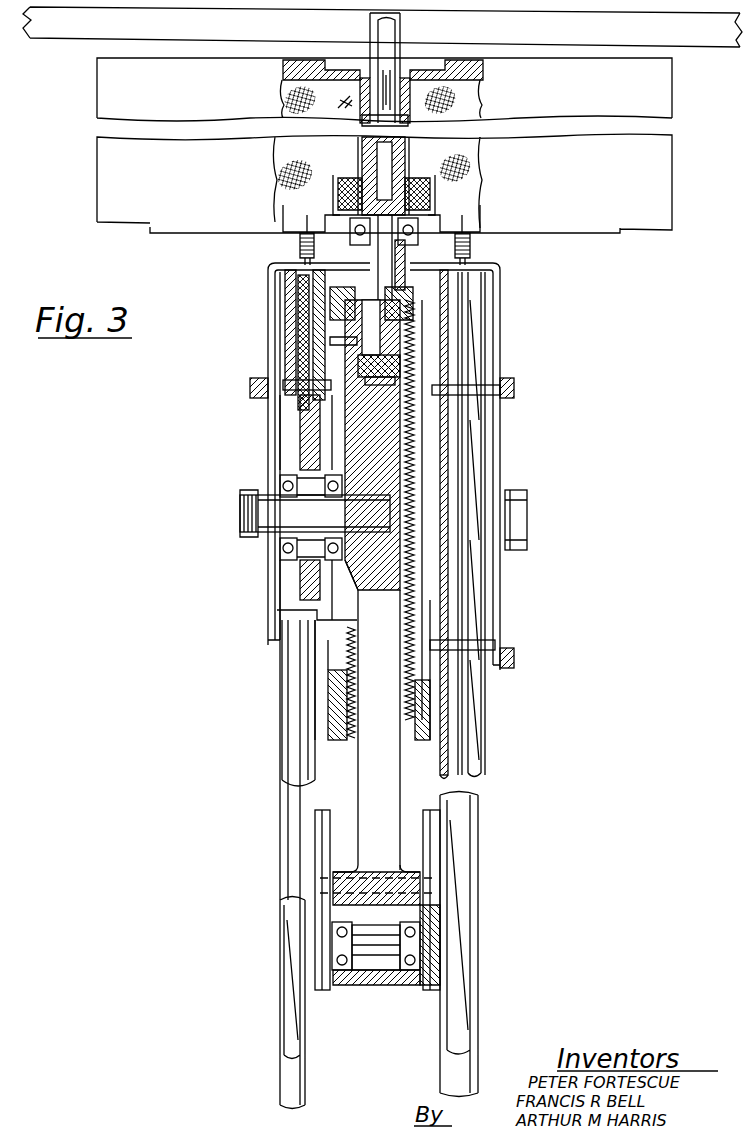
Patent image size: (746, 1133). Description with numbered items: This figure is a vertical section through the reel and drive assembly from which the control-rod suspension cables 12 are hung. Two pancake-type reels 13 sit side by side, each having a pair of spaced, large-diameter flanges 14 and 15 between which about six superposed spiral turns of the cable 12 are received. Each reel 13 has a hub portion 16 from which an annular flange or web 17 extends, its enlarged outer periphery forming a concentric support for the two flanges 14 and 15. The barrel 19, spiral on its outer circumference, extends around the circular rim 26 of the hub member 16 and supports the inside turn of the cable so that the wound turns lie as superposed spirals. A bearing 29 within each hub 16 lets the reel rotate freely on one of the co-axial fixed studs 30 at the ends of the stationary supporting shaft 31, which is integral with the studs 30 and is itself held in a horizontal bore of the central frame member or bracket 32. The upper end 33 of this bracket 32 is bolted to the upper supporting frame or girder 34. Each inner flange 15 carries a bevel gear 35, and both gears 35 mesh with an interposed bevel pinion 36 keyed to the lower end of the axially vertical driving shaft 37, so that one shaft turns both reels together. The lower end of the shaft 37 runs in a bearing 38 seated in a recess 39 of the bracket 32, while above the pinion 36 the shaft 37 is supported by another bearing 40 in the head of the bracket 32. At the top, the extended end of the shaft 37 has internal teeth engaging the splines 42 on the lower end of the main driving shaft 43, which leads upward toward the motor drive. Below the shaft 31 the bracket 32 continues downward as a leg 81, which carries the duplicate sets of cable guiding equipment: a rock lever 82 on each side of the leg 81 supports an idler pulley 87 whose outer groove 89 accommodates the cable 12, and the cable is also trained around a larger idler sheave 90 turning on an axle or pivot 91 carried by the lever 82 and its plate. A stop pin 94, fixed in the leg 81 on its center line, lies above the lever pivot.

The cable 12 is at (283, 280).
The reel 13 is at (255, 693).
The flange 14 is at (290, 315).
The inner flange 15 is at (320, 292).
The hub portion 16 is at (287, 567).
The annular flange or web 17 is at (305, 443).
The barrel 19 is at (305, 363).
The circular rim 26 is at (295, 398).
The bearing 29 is at (280, 468).
The fixed stud 30 is at (272, 518).
The stationary supporting shaft 31 is at (358, 582).
The central frame member or bracket 32 is at (390, 442).
The upper end 33 is at (300, 246).
The upper supporting frame or girder 34 is at (660, 185).
The bevel gear 35 is at (420, 483).
The bevel pinion 36 is at (472, 248).
The driving shaft 37 is at (410, 120).
The bearing 38 is at (361, 338).
The recess 39 is at (402, 368).
The bearing 40 is at (340, 222).
The teeth or splines 42 is at (395, 88).
The main driving shaft 43 is at (380, 47).
The leg 81 is at (365, 793).
The rock lever 82 is at (322, 847).
The idler pulley 87 is at (293, 802).
The outer groove 89 is at (295, 822).
The idler sheave 90 is at (283, 928).
The axle or pivot 91 is at (367, 950).
The stop pin 94 is at (370, 875).